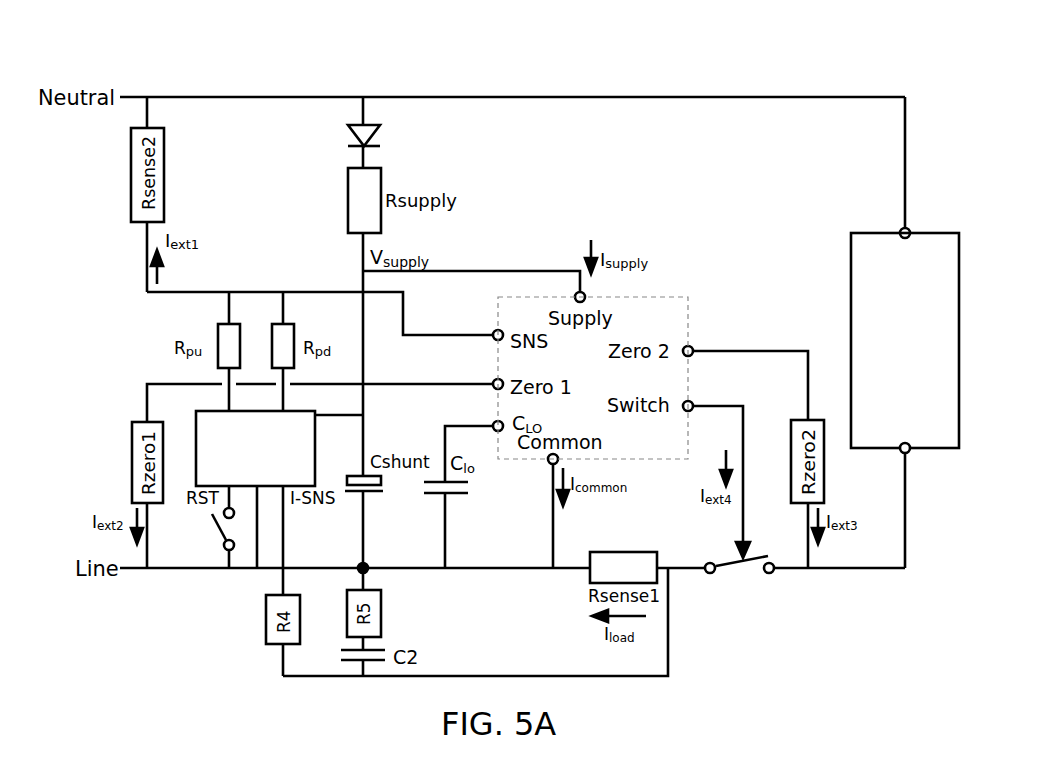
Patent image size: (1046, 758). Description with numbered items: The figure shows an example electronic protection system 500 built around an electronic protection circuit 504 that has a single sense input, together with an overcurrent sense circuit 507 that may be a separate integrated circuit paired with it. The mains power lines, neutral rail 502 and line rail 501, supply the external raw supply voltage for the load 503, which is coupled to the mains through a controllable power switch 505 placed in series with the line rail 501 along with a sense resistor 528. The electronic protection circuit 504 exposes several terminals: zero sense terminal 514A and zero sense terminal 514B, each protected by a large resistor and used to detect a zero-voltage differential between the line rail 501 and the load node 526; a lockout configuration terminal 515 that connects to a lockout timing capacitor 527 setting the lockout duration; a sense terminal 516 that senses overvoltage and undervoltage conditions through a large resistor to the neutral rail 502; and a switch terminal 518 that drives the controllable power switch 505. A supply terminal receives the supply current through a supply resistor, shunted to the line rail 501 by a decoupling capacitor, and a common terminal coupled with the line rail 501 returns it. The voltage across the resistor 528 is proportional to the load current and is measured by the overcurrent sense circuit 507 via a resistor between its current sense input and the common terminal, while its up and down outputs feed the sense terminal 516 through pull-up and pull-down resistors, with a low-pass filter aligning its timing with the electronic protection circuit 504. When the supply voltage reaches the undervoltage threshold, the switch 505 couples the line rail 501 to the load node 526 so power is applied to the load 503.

The electronic protection system 500 is at (143, 42).
The line rail 501 is at (158, 572).
The neutral rail 502 is at (180, 95).
The load 503 is at (905, 332).
The electronic protection circuit 504 is at (683, 297).
The controllable power switch 505 is at (733, 556).
The overcurrent sense circuit 507 is at (255, 448).
The zero sense terminal 514A is at (494, 379).
The zero sense terminal 514B is at (693, 346).
The lockout configuration terminal 515 is at (494, 421).
The sense terminal 516 is at (495, 330).
The switch terminal 518 is at (693, 401).
The load node 526 is at (857, 572).
The lockout timing capacitor 527 is at (457, 500).
The resistor 528 is at (583, 580).